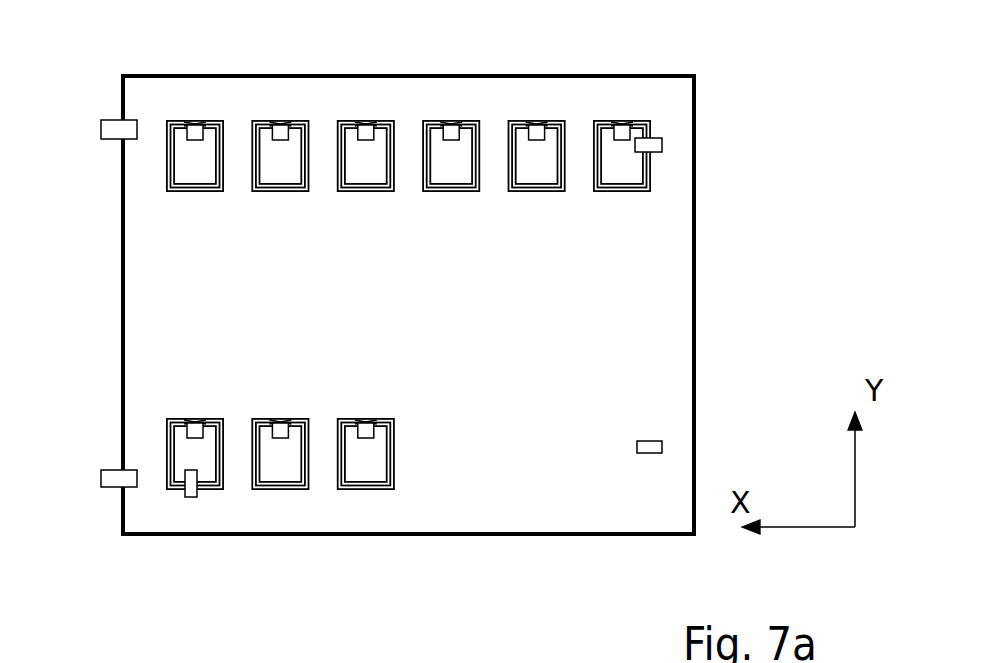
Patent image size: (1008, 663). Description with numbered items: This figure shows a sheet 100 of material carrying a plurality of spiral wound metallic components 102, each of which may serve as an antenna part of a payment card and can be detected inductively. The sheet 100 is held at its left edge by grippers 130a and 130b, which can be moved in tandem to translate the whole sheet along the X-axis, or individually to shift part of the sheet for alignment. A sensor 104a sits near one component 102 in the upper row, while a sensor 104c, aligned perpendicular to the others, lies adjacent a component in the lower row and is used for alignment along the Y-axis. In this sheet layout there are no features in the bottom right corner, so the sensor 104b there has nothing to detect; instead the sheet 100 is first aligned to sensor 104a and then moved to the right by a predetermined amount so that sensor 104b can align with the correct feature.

The sheet 100 is at (297, 75).
The spiral wound metallic component 102 is at (650, 173).
The sensor 104a is at (662, 146).
The sensor 104b is at (657, 441).
The sensor 104c is at (190, 497).
The gripper 130a is at (112, 120).
The gripper 130b is at (112, 470).